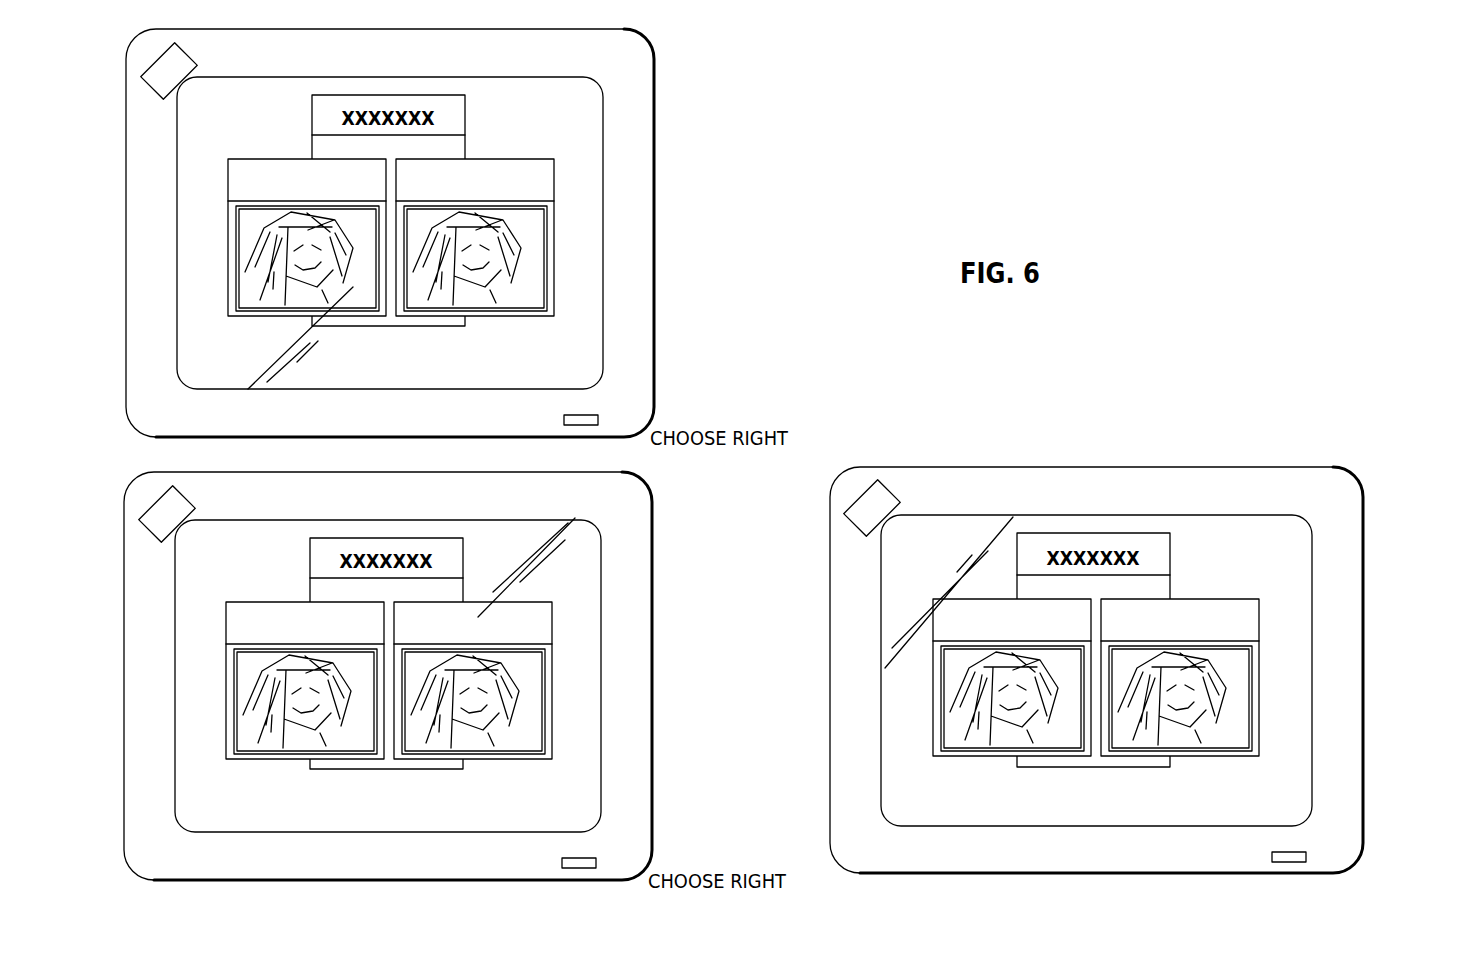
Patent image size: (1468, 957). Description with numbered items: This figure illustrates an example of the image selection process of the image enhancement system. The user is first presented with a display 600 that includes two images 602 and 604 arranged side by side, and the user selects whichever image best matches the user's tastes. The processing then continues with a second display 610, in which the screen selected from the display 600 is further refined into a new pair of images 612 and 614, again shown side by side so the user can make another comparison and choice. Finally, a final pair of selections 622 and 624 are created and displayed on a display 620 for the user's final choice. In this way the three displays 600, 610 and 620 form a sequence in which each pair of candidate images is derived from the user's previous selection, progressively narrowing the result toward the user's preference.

The display 600 is at (654, 202).
The image 602 is at (272, 316).
The image 604 is at (500, 316).
The display 610 is at (431, 676).
The refined image 612 is at (302, 704).
The refined image 614 is at (477, 703).
The display 620 is at (1140, 670).
The final selection image 622 is at (1012, 699).
The final selection image 624 is at (1191, 698).